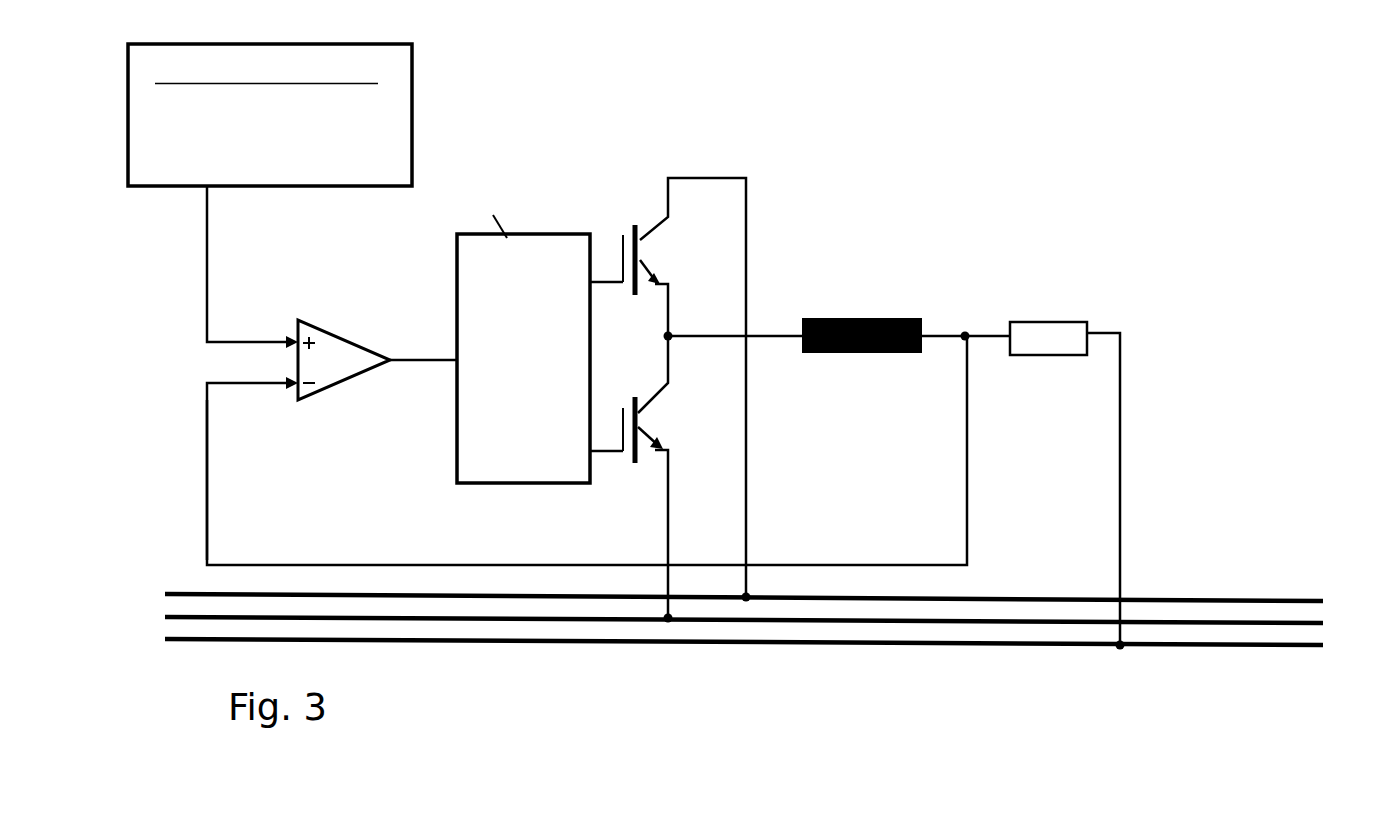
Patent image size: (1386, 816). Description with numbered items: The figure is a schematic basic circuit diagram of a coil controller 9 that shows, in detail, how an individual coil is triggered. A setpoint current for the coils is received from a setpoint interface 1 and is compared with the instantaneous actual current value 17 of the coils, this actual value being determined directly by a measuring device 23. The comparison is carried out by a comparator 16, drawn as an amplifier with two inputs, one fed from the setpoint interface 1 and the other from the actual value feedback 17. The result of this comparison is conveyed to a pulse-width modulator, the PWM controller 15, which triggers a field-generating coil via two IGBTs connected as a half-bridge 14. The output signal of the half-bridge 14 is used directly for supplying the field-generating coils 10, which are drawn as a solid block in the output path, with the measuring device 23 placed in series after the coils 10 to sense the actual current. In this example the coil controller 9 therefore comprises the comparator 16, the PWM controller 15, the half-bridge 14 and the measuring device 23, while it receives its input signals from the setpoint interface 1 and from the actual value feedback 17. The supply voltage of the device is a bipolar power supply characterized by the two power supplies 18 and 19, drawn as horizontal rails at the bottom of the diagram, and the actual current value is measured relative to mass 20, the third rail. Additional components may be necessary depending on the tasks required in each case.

The setpoint interface 1 is at (270, 115).
The coil controller 9 is at (1053, 202).
The field-generating coils 10 is at (865, 318).
The half-bridge 14 is at (634, 368).
The PWM controller 15 is at (499, 335).
The comparator 16 is at (344, 358).
The actual value feedback 17 is at (255, 392).
The power supply 18 is at (1243, 600).
The power supply 19 is at (1202, 623).
The mass 20 is at (1300, 648).
The measuring device 23 is at (1065, 342).